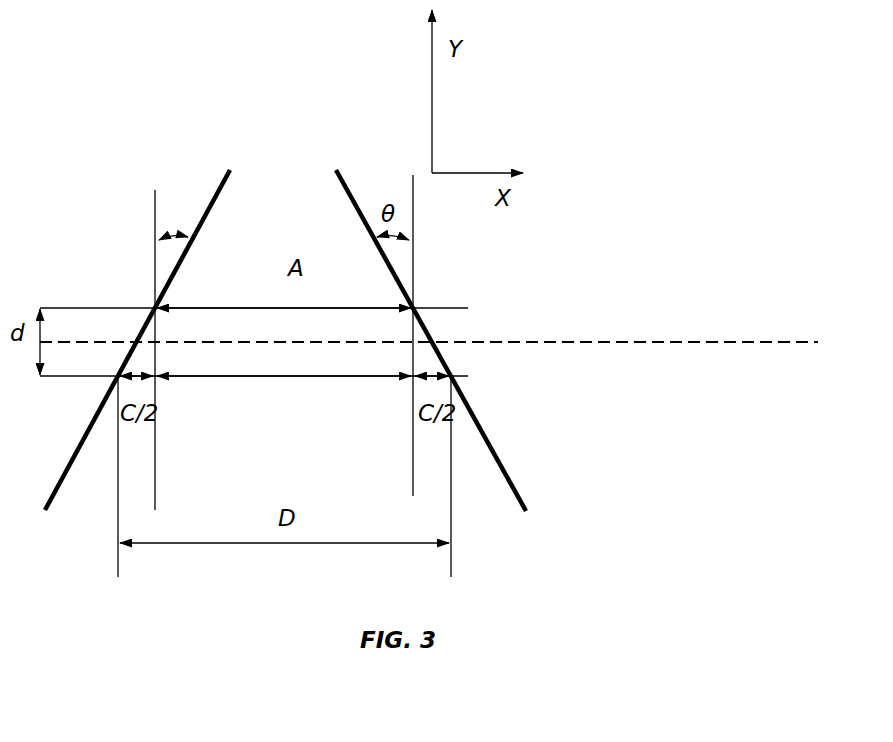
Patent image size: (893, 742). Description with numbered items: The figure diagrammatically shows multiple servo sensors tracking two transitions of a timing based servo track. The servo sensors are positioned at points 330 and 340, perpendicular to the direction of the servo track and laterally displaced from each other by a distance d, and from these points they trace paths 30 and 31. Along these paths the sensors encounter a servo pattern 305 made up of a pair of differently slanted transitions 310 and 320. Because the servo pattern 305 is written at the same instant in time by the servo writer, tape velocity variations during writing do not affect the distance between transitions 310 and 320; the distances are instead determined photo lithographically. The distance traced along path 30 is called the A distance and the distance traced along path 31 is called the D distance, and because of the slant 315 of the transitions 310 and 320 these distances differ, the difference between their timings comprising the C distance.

The path 30 is at (86, 307).
The path 31 is at (86, 378).
The servo pattern 305 is at (329, 182).
The transition 310 is at (216, 188).
The transition 320 is at (364, 227).
The slant 315 is at (173, 233).
The point 330 is at (151, 301).
The point 340 is at (161, 383).